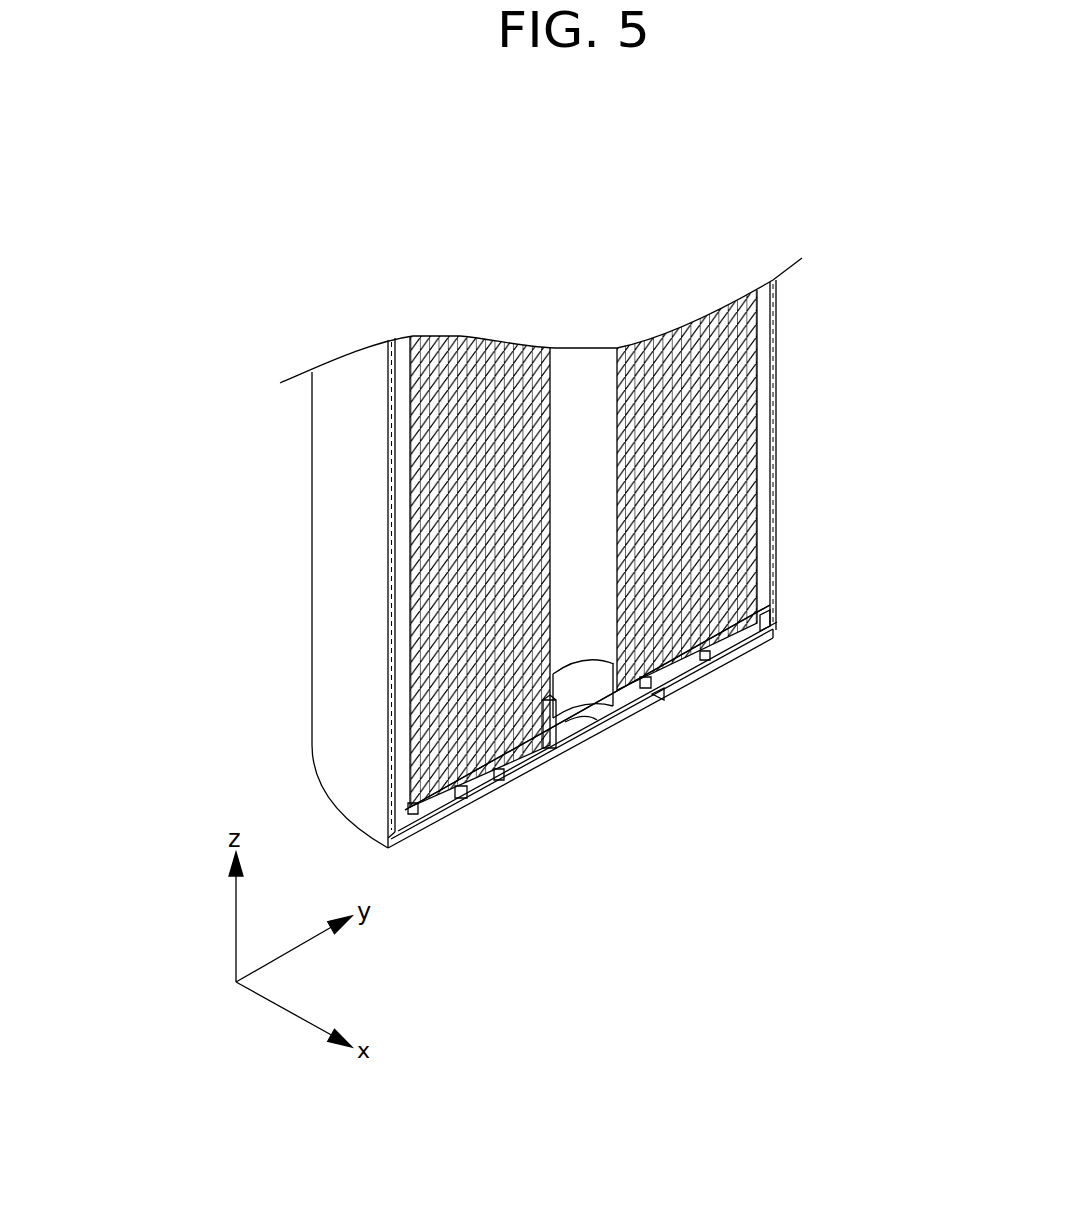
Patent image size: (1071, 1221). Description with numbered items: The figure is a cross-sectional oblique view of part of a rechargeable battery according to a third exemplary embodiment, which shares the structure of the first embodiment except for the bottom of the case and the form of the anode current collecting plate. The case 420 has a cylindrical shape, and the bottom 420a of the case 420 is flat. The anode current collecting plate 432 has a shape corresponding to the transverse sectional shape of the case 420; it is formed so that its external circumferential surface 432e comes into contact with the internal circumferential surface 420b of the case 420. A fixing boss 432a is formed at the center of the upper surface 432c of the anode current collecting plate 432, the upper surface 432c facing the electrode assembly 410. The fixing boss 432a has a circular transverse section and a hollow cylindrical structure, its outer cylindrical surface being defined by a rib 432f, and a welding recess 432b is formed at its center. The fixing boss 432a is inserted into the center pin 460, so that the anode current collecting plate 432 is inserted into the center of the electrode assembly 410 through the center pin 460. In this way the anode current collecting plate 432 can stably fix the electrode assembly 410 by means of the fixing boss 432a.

The electrode assembly 410 is at (667, 672).
The case 420 is at (322, 527).
The bottom of case 420a is at (757, 648).
The internal circumferential surface of case 420b is at (393, 812).
The anode current collecting plate 432 is at (472, 795).
The fixing boss 432a is at (660, 698).
The welding recess 432b is at (585, 720).
The upper surface of anode current collecting plate 432c is at (762, 624).
The external circumferential surface of anode current collecting plate 432e is at (385, 835).
The rib 432f is at (548, 745).
The center pin 460 is at (580, 438).